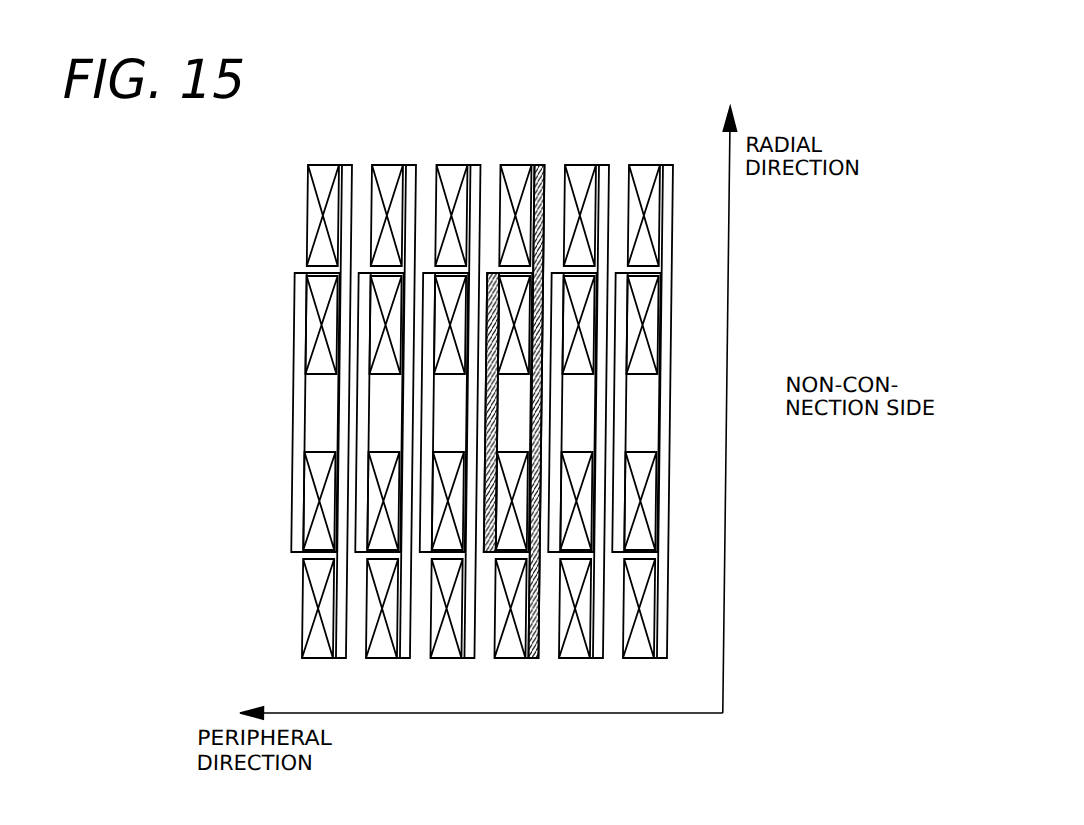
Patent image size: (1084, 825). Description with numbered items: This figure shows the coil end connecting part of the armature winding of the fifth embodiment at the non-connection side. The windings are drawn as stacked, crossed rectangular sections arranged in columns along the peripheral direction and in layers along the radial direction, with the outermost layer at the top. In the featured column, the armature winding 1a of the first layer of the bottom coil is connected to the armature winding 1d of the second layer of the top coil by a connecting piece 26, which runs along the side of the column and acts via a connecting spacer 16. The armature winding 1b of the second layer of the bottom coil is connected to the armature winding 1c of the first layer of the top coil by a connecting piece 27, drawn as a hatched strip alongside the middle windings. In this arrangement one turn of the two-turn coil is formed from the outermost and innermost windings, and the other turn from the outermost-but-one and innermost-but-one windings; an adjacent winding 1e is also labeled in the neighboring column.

The armature winding of the first layer of the bottom coil 1a is at (517, 173).
The armature winding of the second layer of the bottom coil 1b is at (516, 285).
The armature winding of the first layer of the top coil 1c is at (515, 547).
The armature winding of the second layer of the top coil 1d is at (518, 657).
The coil segment 1e is at (329, 173).
The connecting spacer 16 is at (537, 175).
The connecting piece 26 is at (545, 172).
The connecting piece 27 is at (498, 273).